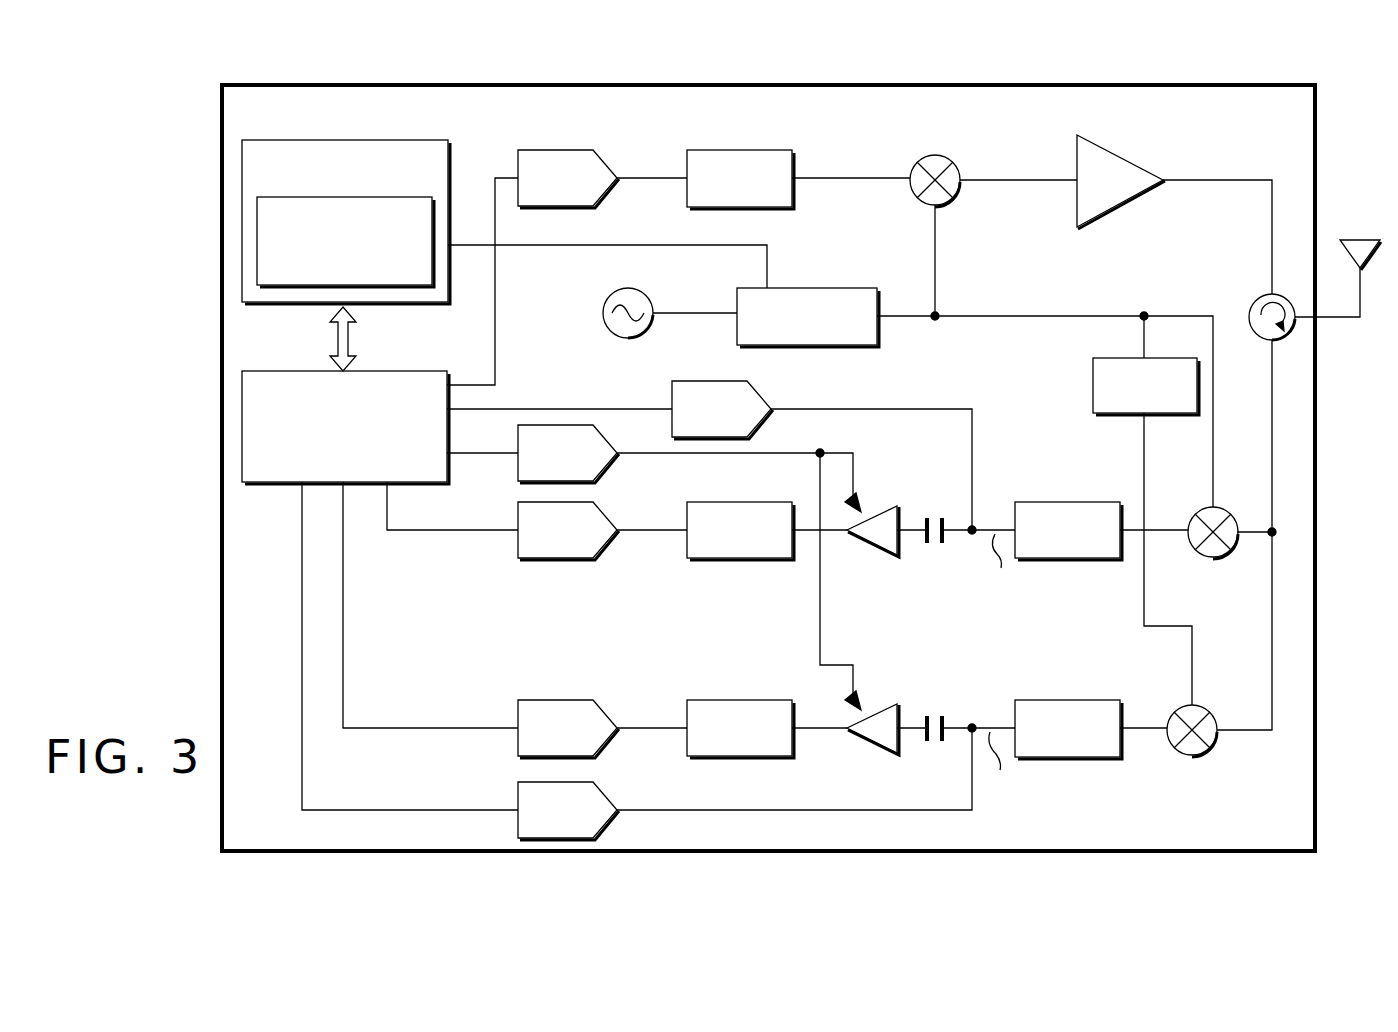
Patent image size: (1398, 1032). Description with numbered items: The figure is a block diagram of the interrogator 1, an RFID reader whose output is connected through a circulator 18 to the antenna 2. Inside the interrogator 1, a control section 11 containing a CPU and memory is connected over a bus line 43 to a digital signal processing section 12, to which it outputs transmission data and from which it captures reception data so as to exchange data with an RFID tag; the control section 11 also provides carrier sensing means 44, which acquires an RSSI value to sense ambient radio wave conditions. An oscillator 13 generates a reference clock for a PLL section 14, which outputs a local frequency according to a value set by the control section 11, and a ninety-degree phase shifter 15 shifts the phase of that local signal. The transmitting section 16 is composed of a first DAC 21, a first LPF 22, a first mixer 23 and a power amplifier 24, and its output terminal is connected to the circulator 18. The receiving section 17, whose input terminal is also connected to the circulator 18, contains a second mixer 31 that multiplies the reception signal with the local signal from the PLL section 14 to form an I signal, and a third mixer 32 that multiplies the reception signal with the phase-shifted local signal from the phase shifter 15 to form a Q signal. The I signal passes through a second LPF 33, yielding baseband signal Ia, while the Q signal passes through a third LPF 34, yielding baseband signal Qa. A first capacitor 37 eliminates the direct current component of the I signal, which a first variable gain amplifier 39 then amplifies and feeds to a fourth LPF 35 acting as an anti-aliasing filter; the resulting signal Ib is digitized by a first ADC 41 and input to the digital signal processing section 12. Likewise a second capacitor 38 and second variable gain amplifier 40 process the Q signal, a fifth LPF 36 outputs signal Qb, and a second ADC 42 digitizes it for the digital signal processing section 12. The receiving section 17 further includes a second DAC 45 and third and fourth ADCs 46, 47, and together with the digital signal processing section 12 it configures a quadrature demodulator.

The interrogator 1 is at (222, 148).
The antenna 2 is at (1360, 240).
The control section 11 is at (374, 142).
The digital signal processing section 12 is at (410, 371).
The oscillator 13 is at (604, 313).
The PLL section 14 is at (814, 288).
The 90-degree phase shifter 15 is at (1093, 378).
The transmitting section 16 is at (978, 266).
The receiving section 17 is at (944, 637).
The circulator 18 is at (1256, 298).
The first DAC 21 is at (598, 153).
The first LPF 22 is at (780, 150).
The first mixer 23 is at (948, 162).
The power amplifier 24 is at (1123, 161).
The second mixer 31 is at (1222, 510).
The third mixer 32 is at (1205, 709).
The second LPF 33 is at (1075, 502).
The third LPF 34 is at (1075, 700).
The fourth LPF 35 is at (742, 562).
The fifth LPF 36 is at (742, 700).
The first capacitor 37 is at (929, 548).
The second capacitor 38 is at (942, 715).
The first variable gain amplifier 39 is at (883, 505).
The second variable gain amplifier 40 is at (881, 705).
The first ADC 41 is at (577, 560).
The second ADC 42 is at (555, 700).
The bus line 43 is at (338, 340).
The carrier sensing means 44 is at (257, 250).
The second DAC 45 is at (610, 450).
The third ADC 46 is at (712, 380).
The fourth ADC 47 is at (518, 792).